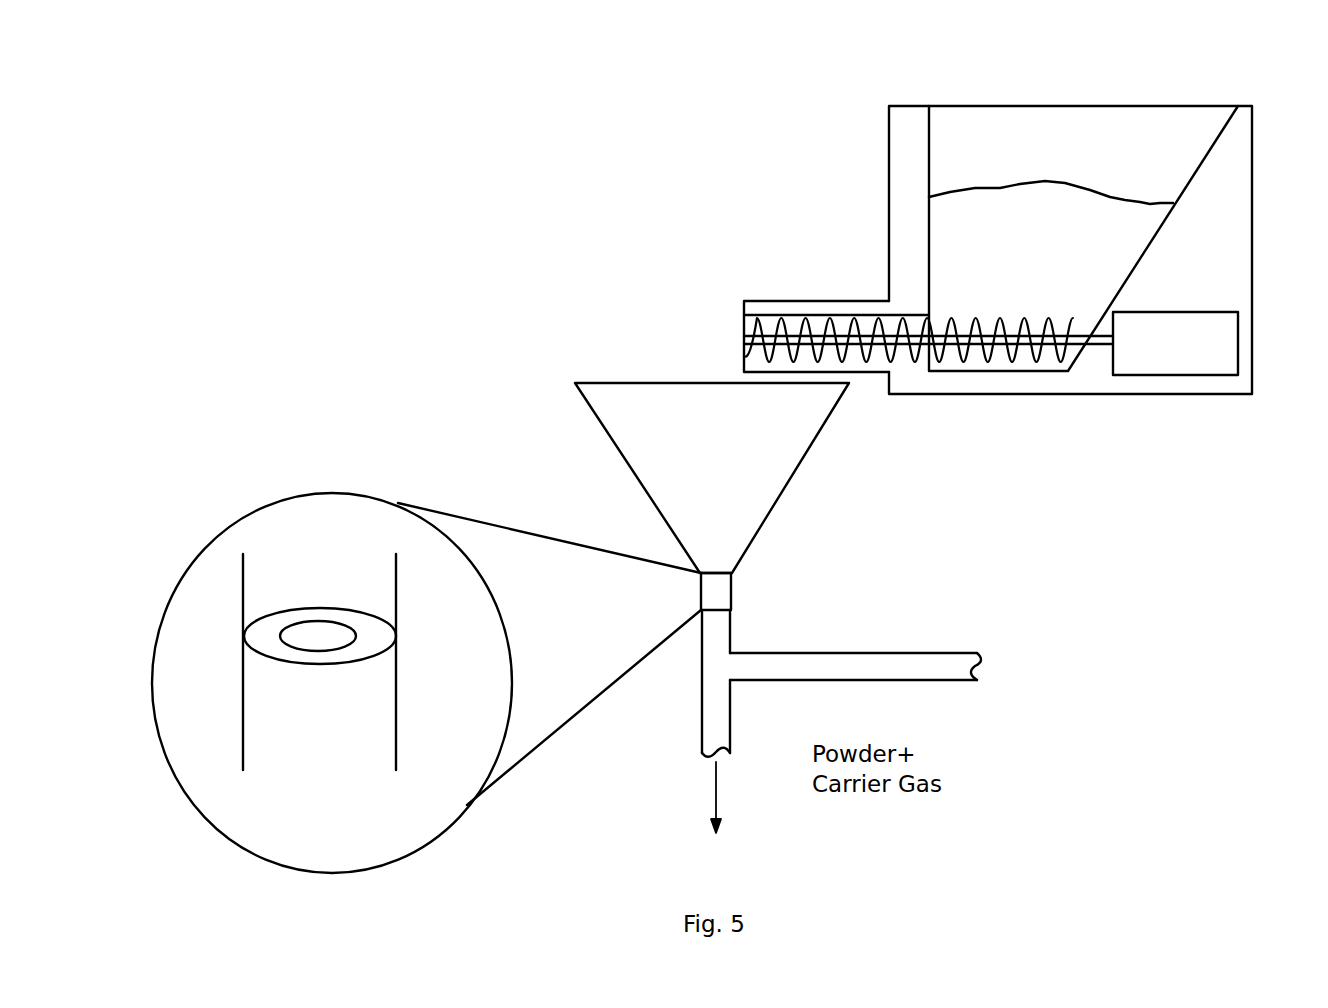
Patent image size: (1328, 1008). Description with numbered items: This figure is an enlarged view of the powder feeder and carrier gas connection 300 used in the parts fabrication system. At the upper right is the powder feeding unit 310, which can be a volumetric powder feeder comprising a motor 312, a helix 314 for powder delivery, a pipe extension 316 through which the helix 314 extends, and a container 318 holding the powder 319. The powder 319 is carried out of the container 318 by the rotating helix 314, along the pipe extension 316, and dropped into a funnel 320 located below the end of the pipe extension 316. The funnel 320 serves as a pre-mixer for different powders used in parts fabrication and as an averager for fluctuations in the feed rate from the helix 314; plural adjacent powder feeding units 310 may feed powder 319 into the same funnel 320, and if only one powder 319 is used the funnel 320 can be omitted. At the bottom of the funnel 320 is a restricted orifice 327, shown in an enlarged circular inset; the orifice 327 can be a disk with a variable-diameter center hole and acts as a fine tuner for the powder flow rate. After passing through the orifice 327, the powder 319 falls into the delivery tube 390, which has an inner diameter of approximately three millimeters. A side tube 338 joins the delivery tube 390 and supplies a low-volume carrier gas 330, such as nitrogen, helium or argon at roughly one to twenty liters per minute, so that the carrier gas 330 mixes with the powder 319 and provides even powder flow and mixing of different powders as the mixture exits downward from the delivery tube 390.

The powder feeder and carrier gas connection 300 is at (599, 100).
The powder feeding unit 310 is at (836, 232).
The motor 312 is at (1175, 343).
The helix 314 is at (996, 376).
The pipe extension 316 is at (724, 319).
The container 318 is at (1112, 159).
The powder 319 is at (1051, 218).
The funnel 320 is at (600, 451).
The restricted orifice 327 is at (329, 623).
The carrier gas 330 is at (1147, 668).
The carrier gas connection tube 338 is at (822, 667).
The delivery tube 390 is at (679, 733).